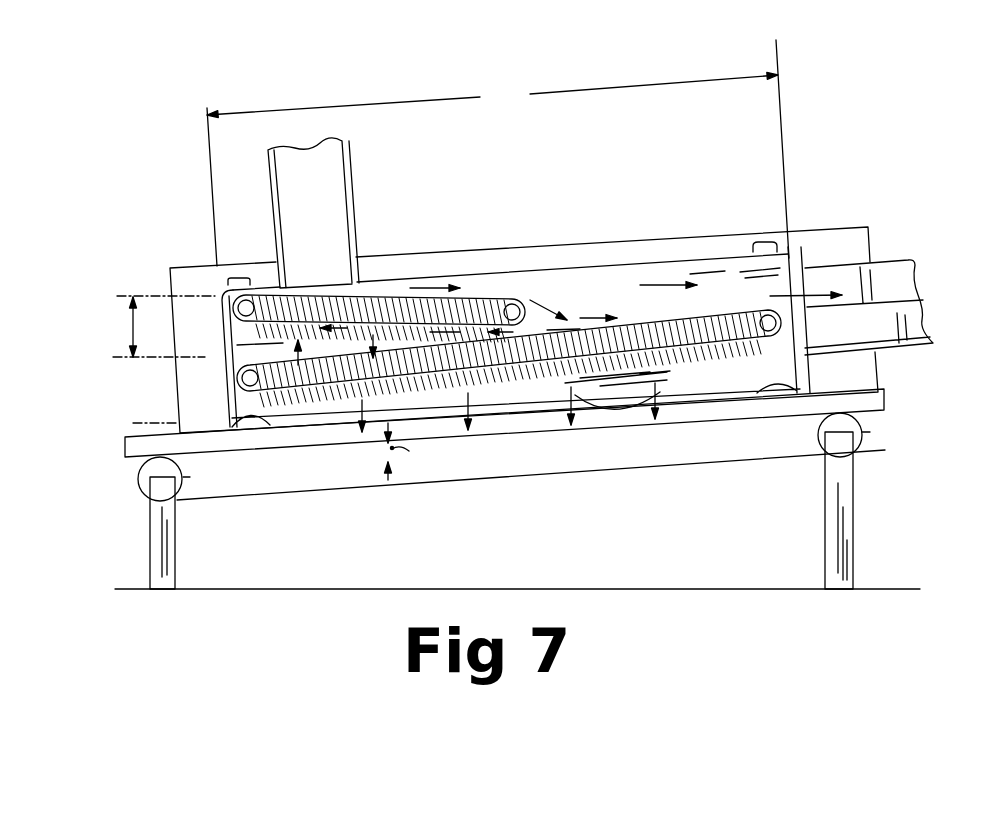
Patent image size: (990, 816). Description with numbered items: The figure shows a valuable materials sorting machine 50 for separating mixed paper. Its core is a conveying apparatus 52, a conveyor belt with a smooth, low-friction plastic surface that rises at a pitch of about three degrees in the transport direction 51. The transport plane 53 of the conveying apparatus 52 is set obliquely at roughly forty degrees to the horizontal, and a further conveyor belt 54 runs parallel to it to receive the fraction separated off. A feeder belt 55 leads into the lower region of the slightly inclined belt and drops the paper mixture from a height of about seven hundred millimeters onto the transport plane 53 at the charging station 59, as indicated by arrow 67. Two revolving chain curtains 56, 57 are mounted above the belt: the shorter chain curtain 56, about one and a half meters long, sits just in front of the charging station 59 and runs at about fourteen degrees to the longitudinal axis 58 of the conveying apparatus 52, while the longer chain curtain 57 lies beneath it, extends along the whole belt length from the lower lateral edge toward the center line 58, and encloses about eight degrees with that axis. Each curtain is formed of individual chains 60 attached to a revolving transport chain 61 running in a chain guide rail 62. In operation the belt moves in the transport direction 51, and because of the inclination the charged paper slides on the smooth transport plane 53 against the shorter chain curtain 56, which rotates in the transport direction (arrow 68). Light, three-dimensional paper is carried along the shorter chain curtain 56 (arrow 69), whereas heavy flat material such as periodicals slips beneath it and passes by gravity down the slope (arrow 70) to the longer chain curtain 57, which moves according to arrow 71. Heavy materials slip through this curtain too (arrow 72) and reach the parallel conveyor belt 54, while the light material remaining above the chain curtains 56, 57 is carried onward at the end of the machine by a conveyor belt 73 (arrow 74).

The valuable materials sorting machine 50 is at (542, 314).
The transport direction 51 is at (668, 282).
The conveying apparatus 52 is at (582, 262).
The transport plane 53 is at (508, 327).
The further conveyor belt 54 is at (568, 450).
The feeder belt 55 is at (348, 177).
The shorter chain curtain 56 is at (377, 295).
The longer chain curtain 57 is at (692, 312).
The longitudinal axis 58 is at (186, 353).
The charging station 59 is at (318, 297).
The individual chains 60 is at (713, 367).
The revolving transport chain 61 is at (502, 257).
The chain guide rail 62 is at (478, 297).
The charging arrow 67 is at (311, 280).
The rotation arrow of shorter chain curtain 68 is at (517, 297).
The light material transport arrow 69 is at (423, 288).
The gravity slide arrow 70 is at (310, 350).
The rotation arrow of longer chain curtain 71 is at (808, 344).
The heavy material passage arrow 72 is at (590, 410).
The conveyor belt 73 is at (907, 292).
The discharge arrow 74 is at (820, 280).